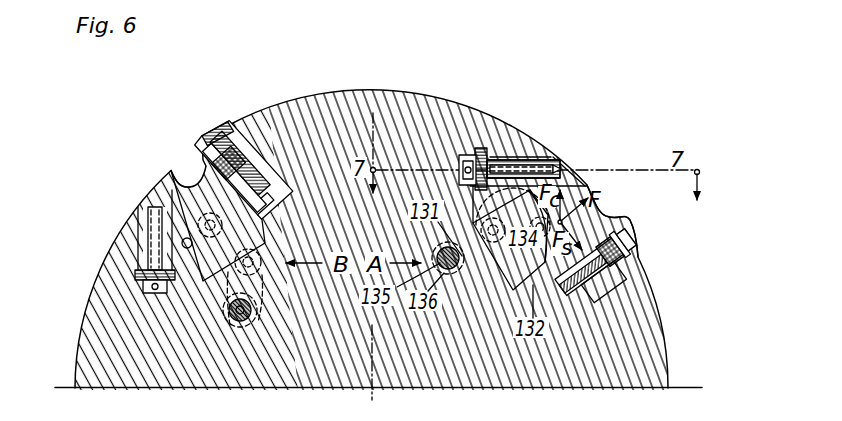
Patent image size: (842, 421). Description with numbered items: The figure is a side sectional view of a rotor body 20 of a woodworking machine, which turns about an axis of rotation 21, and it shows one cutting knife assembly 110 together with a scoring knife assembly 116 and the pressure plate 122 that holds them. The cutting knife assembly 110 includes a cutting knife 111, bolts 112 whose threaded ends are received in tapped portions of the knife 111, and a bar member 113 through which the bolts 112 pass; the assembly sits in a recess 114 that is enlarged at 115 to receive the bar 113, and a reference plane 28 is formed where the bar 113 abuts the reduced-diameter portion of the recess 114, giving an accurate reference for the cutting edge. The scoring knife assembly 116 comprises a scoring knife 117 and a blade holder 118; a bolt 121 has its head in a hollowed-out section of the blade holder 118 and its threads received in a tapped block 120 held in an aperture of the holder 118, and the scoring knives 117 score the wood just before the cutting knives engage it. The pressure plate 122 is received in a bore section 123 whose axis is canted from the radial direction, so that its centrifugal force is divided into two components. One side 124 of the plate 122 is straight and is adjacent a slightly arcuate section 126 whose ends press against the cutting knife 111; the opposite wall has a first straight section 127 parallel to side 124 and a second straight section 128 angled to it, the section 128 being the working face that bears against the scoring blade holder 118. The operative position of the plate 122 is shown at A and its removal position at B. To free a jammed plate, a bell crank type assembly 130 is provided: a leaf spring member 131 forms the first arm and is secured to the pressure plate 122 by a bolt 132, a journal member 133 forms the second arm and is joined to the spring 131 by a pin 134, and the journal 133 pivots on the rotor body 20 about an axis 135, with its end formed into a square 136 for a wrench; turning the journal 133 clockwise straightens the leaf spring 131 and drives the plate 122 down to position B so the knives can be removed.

The rotor body 20 is at (373, 94).
The axis of rotation 21 is at (375, 387).
The reference plane 28 is at (140, 268).
The cutting knife assembly 110 is at (571, 131).
The cutting knife 111 is at (568, 182).
The bolts 112 is at (510, 158).
The bar member 113 is at (476, 153).
The recess 114 is at (140, 256).
The enlarged portion of recess 115 is at (460, 165).
The scoring knife assembly 116 is at (592, 291).
The scoring knife 117 is at (626, 229).
The blade holder 118 is at (633, 254).
The block 120 is at (592, 226).
The bolt 121 is at (636, 331).
The pressure plate 122 is at (186, 183).
The bore section 123 is at (274, 208).
The side of pressure plate 124 is at (168, 260).
The arcuate section 126 is at (170, 170).
The first straight section 127 is at (270, 230).
The second straight section 128 is at (203, 158).
The bell crank type assembly 130 is at (314, 302).
The leaf spring member 131 is at (184, 300).
The bolt 132 is at (210, 216).
The journal member 133 is at (478, 268).
The pin 134 is at (266, 254).
The axis 135 is at (241, 323).
The square 136 is at (250, 316).